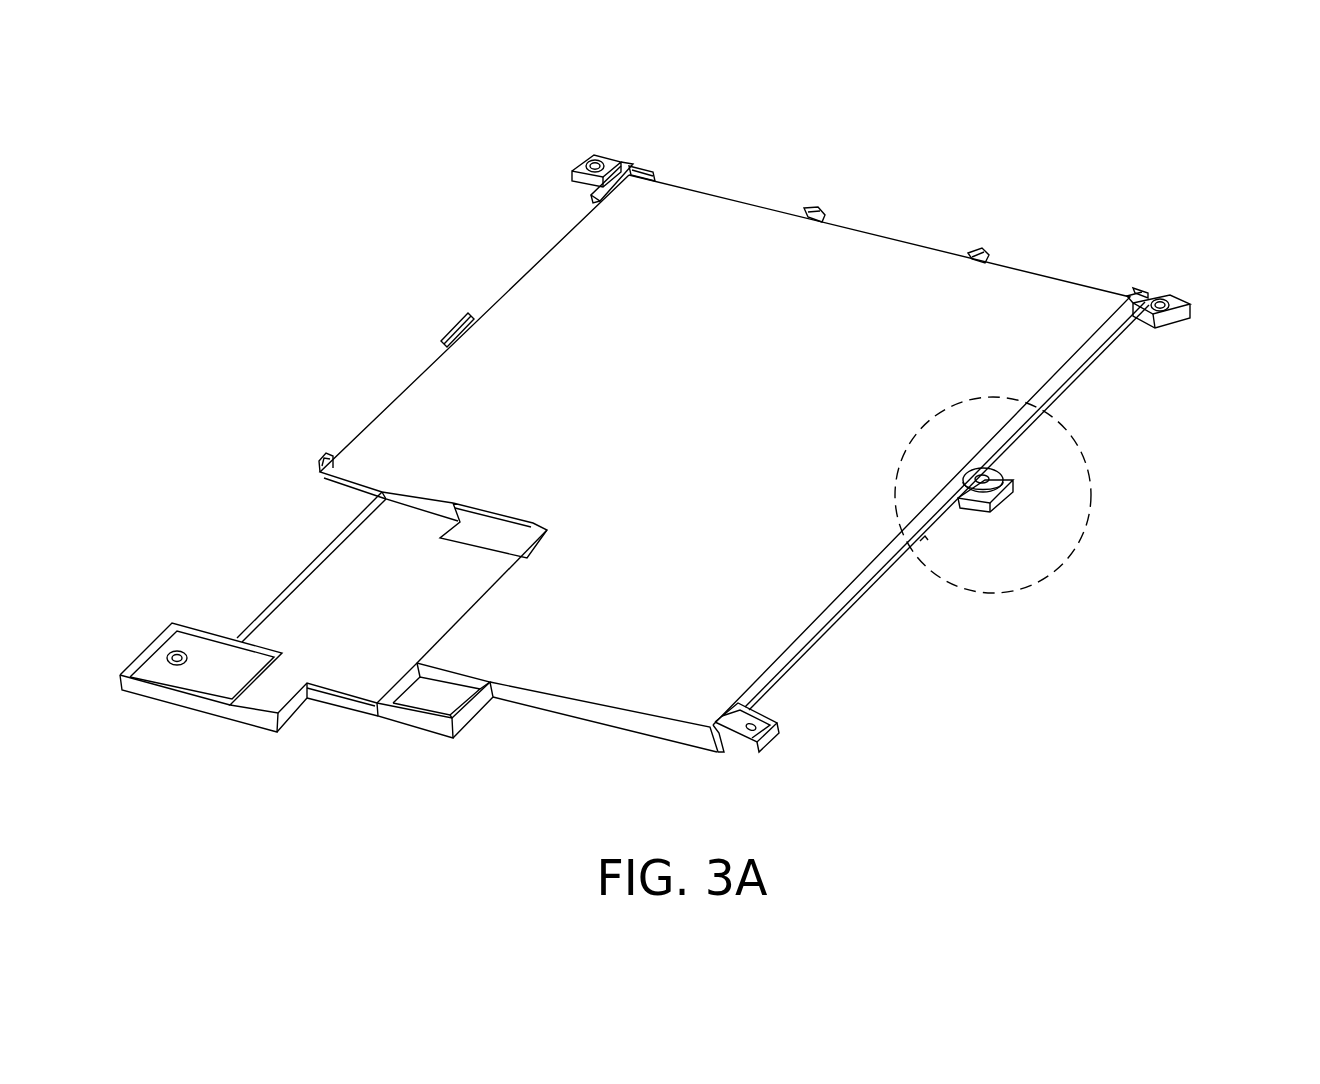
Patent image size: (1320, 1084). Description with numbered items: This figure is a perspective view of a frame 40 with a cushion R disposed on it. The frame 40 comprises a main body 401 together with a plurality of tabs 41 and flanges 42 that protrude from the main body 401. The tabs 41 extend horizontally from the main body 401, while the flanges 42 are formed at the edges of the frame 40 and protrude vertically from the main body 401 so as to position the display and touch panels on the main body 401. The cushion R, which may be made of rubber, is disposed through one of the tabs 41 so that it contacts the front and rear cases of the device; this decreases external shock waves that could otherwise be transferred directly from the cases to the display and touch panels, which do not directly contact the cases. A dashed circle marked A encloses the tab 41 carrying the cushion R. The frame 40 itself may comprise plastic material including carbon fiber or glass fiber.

The frame 40 is at (634, 463).
The main body 401 is at (615, 650).
The tab 41 is at (575, 186).
The flange 42 is at (643, 163).
The cushion R is at (997, 474).
The enlarged region A is at (1071, 433).